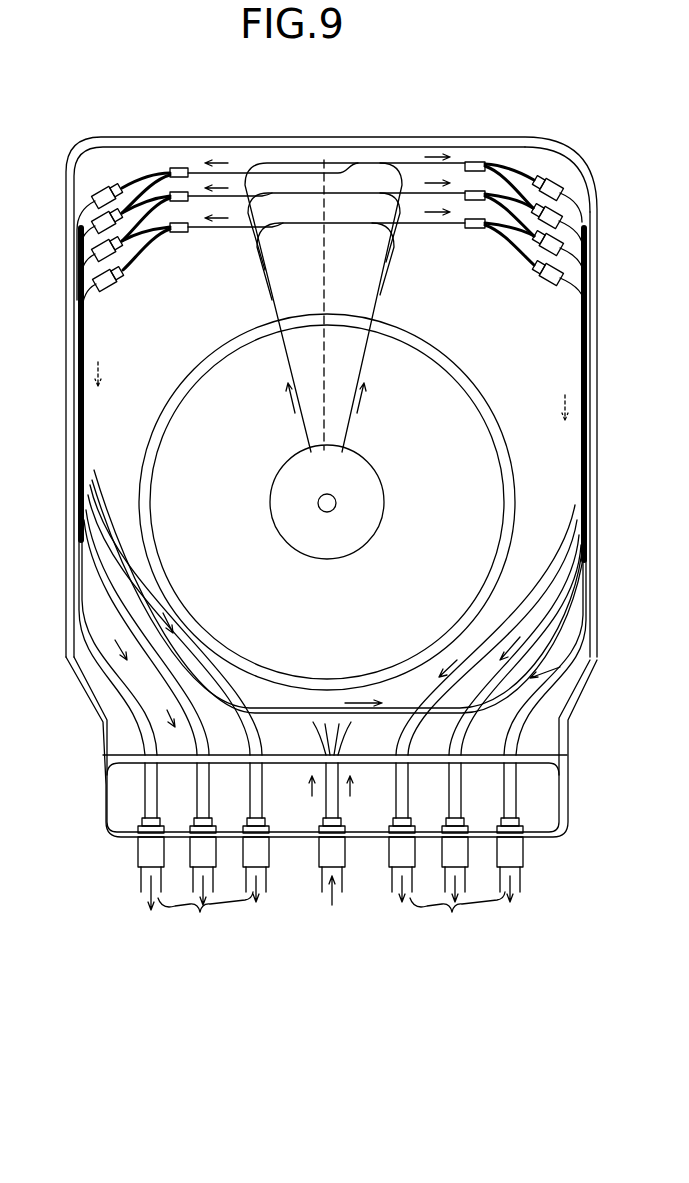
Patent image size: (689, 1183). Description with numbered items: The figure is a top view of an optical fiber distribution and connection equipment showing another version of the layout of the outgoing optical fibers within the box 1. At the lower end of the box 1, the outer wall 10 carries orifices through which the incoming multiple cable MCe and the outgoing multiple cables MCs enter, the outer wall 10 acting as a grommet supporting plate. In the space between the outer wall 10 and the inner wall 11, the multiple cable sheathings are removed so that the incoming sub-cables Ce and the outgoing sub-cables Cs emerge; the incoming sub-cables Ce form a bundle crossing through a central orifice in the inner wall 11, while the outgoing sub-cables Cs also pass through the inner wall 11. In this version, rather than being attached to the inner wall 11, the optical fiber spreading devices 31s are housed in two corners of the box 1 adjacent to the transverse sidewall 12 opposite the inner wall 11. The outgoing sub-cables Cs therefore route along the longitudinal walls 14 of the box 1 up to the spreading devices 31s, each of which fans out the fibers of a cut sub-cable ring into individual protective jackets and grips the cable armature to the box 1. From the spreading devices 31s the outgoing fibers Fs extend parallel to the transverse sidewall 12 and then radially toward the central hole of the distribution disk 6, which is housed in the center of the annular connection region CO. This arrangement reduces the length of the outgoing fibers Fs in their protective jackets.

The box 1 is at (486, 115).
The sidewall 12 is at (322, 134).
The outer wall 10 is at (555, 836).
The inner wall 11 is at (530, 762).
The connection region CO is at (432, 334).
The distribution disk 6 is at (384, 509).
The outgoing optical fibers Fs is at (391, 268).
The optical fiber spreading device 31s is at (124, 286).
The longitudinal walls 14 is at (66, 500).
The outgoing sub-cables Cs is at (578, 522).
The incoming sub-cables Ce is at (349, 776).
The outgoing multiple cables MCs is at (330, 851).
The incoming multiple cable MCe is at (337, 895).